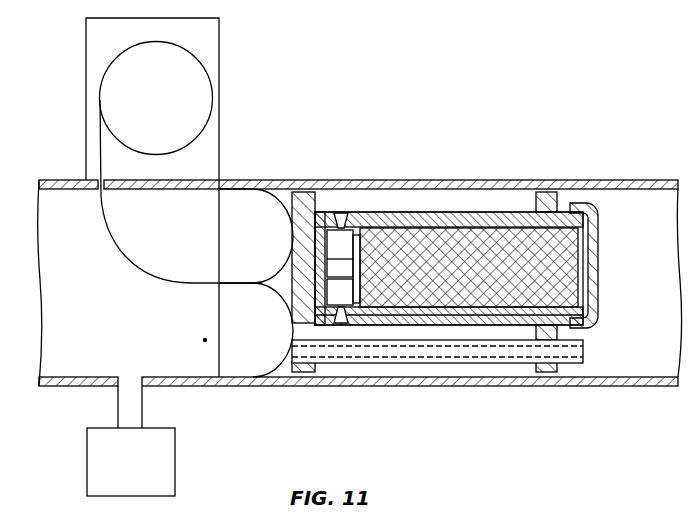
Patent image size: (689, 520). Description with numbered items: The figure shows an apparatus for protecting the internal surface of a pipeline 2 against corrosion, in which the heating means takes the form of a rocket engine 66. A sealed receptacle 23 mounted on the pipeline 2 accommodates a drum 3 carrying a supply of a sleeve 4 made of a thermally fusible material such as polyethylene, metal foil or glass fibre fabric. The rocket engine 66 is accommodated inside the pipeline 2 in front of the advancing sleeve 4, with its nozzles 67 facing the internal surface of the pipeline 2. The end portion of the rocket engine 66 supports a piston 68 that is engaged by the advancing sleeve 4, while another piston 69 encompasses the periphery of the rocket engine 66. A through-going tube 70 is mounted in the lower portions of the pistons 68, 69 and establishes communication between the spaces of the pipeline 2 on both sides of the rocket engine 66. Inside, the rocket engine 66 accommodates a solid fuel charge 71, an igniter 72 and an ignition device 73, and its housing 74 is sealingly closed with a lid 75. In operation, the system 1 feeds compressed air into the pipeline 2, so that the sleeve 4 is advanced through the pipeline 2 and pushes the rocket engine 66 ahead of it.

The system 1 is at (131, 441).
The pipeline 2 is at (617, 181).
The drum 3 is at (209, 90).
The sleeve 4 is at (190, 287).
The sealed receptacle 23 is at (218, 37).
The rocket engine 66 is at (323, 213).
The nozzles 67 is at (340, 219).
The piston 68 is at (302, 202).
The piston 69 is at (547, 373).
The through-going tube 70 is at (503, 363).
The solid fuel charge 71 is at (451, 295).
The igniter 72 is at (358, 292).
The ignition device 73 is at (298, 286).
The housing 74 is at (400, 212).
The lid 75 is at (575, 207).